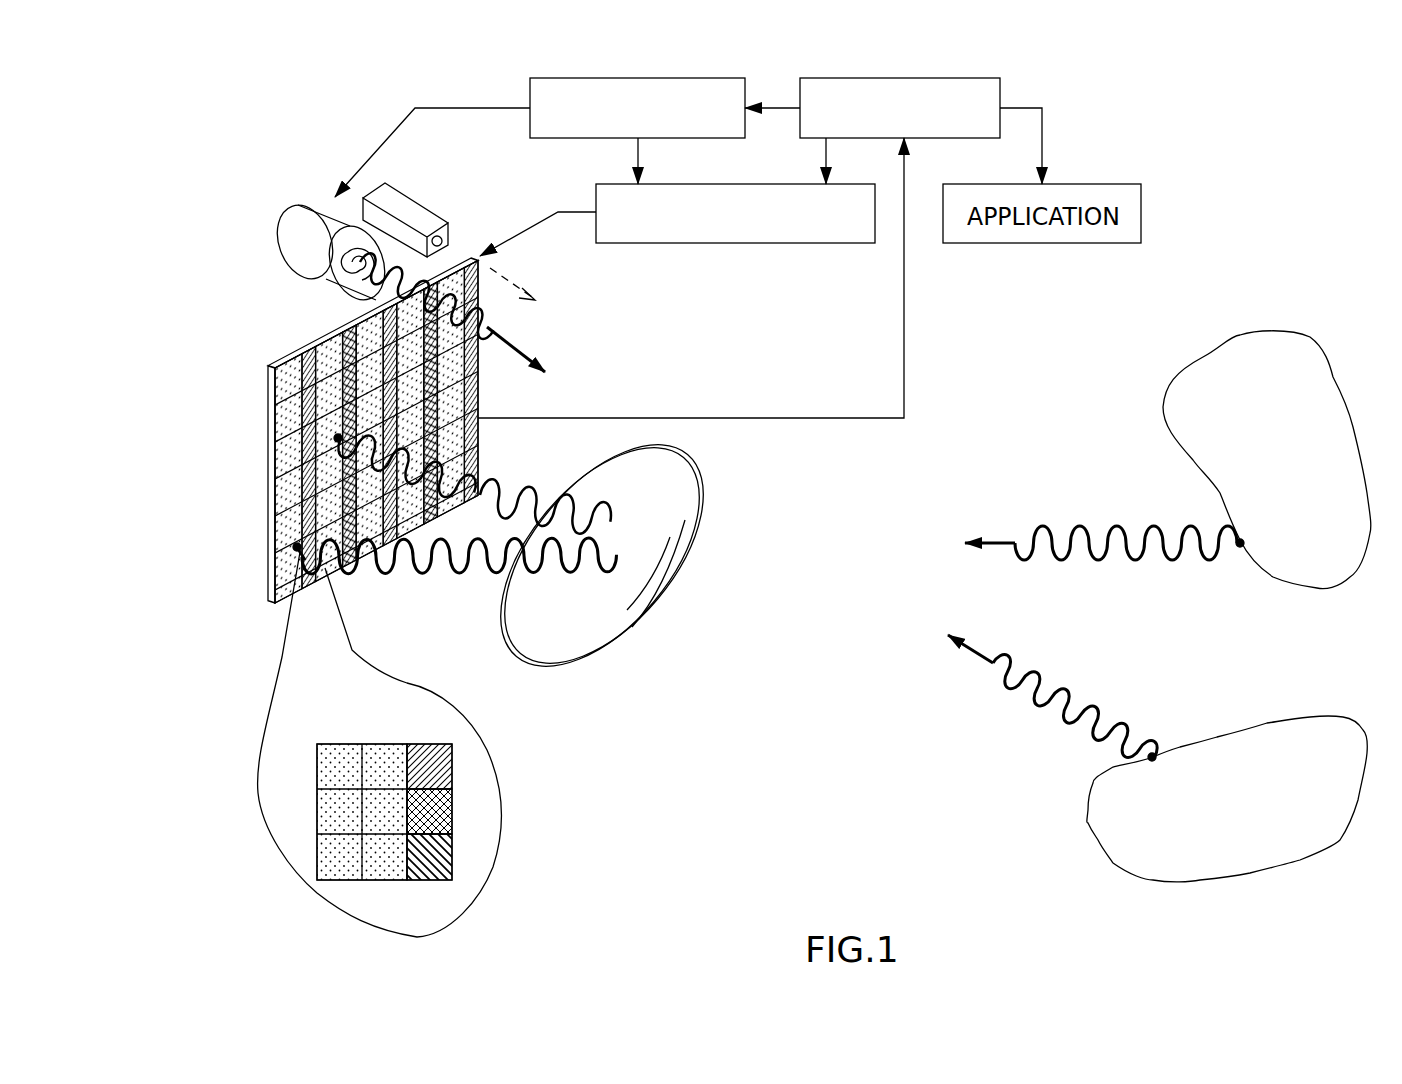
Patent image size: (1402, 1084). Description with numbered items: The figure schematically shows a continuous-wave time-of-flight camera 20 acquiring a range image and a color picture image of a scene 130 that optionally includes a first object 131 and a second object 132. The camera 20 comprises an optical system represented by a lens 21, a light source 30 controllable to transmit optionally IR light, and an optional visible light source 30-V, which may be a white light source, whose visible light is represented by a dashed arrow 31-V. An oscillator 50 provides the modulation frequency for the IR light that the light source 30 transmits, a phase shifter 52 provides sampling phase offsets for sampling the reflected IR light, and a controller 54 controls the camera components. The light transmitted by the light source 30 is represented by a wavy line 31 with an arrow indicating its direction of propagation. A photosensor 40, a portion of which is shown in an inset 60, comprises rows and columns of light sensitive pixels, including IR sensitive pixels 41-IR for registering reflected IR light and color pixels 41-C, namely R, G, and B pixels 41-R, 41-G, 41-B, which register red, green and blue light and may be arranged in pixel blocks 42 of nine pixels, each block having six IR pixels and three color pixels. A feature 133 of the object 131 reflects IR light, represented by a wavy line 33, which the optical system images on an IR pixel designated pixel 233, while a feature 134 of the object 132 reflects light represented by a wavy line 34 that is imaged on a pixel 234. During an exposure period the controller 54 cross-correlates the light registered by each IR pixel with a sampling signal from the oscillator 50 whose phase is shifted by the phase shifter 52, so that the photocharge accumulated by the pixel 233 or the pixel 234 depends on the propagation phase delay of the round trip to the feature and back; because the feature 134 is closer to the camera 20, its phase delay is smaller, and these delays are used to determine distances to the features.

The CW-TOF camera 20 is at (233, 160).
The lens 21 is at (618, 650).
The light source 30 is at (300, 205).
The visible light source 30-V is at (393, 200).
The transmitted light 31 is at (500, 325).
The visible light 31-V is at (490, 265).
The reflected light 33 is at (445, 580).
The reflected light 34 is at (505, 490).
The photosensor 40 is at (324, 430).
The color pixels 41-C is at (440, 588).
The IR sensitive pixels 41-IR is at (392, 818).
The R pixel 41-R is at (452, 752).
The G pixel 41-G is at (452, 800).
The B pixel 41-B is at (452, 848).
The pixel block 42 is at (436, 611).
The oscillator 50 is at (598, 78).
The phase shifter 52 is at (612, 184).
The controller 54 is at (870, 78).
The inset 60 is at (495, 728).
The scene 130 is at (1232, 564).
The object 131 is at (1330, 457).
The object 132 is at (1355, 765).
The feature 133 is at (1241, 545).
The feature 134 is at (1153, 758).
The pixel 233 is at (297, 548).
The pixel 234 is at (336, 441).